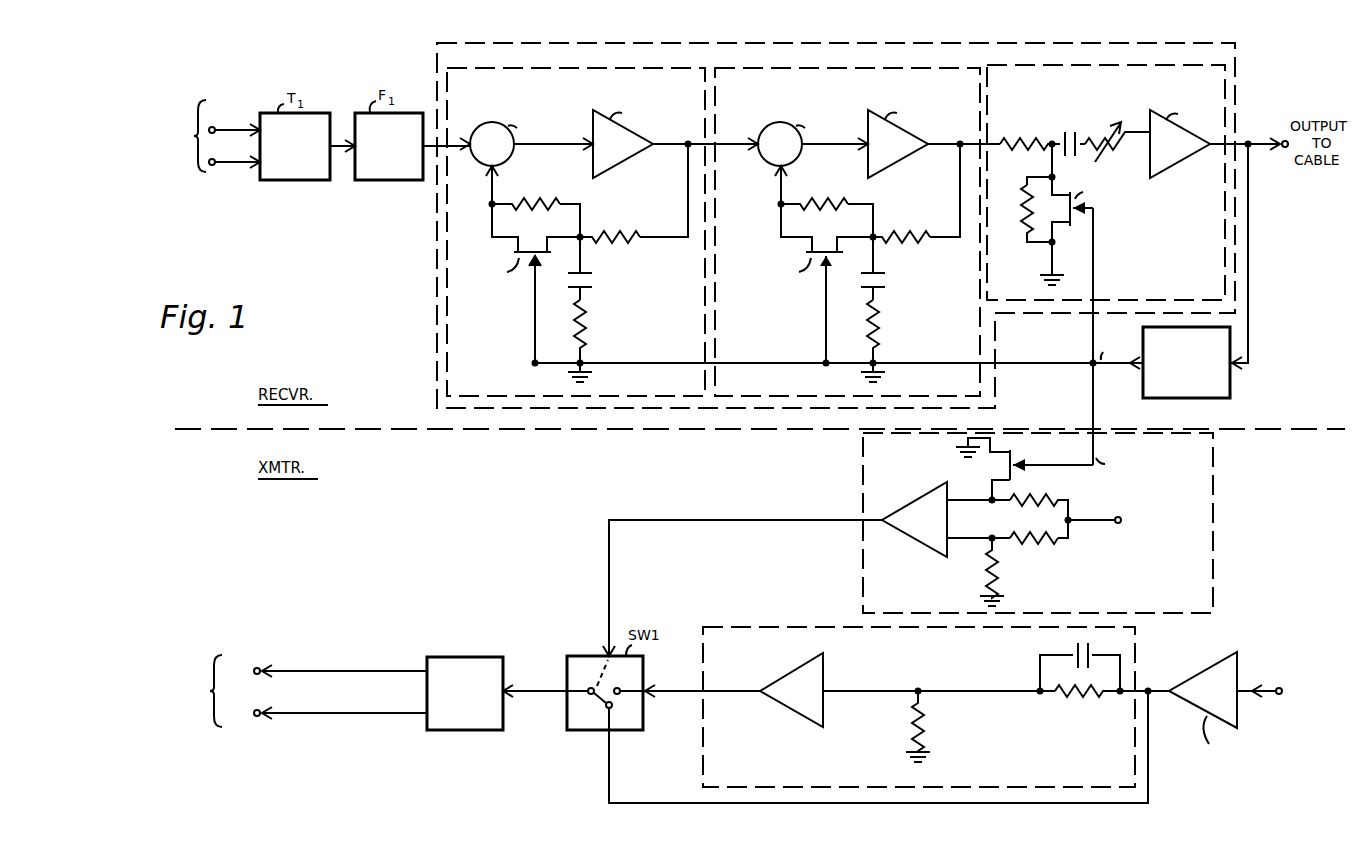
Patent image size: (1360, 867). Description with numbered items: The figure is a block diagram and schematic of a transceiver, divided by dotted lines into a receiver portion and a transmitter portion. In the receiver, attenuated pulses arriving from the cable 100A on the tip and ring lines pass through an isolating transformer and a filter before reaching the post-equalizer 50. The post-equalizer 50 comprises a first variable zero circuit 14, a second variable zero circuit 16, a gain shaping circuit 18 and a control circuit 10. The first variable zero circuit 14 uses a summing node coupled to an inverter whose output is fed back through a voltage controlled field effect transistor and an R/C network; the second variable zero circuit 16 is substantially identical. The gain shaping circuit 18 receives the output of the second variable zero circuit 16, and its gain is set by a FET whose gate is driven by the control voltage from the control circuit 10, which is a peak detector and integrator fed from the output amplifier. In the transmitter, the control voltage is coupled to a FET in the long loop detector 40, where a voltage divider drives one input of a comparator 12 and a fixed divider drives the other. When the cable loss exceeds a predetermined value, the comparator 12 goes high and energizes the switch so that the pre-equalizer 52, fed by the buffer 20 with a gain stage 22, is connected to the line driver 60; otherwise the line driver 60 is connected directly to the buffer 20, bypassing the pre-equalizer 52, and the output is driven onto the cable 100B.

The control circuit 10 is at (1232, 393).
The comparator 12 is at (922, 490).
The first variable zero circuit 14 is at (664, 68).
The second variable zero circuit 16 is at (949, 68).
The gain shaping circuit 18 is at (1152, 65).
The buffer 20 is at (1220, 701).
The gain amplifier 22 is at (797, 662).
The long loop detector circuit 40 is at (1134, 603).
The post-equalizer 50 is at (920, 62).
The pre-equalizer 52 is at (974, 668).
The line driver 60 is at (462, 657).
The receive cable 100A is at (199, 136).
The transmit cable 100B is at (291, 691).